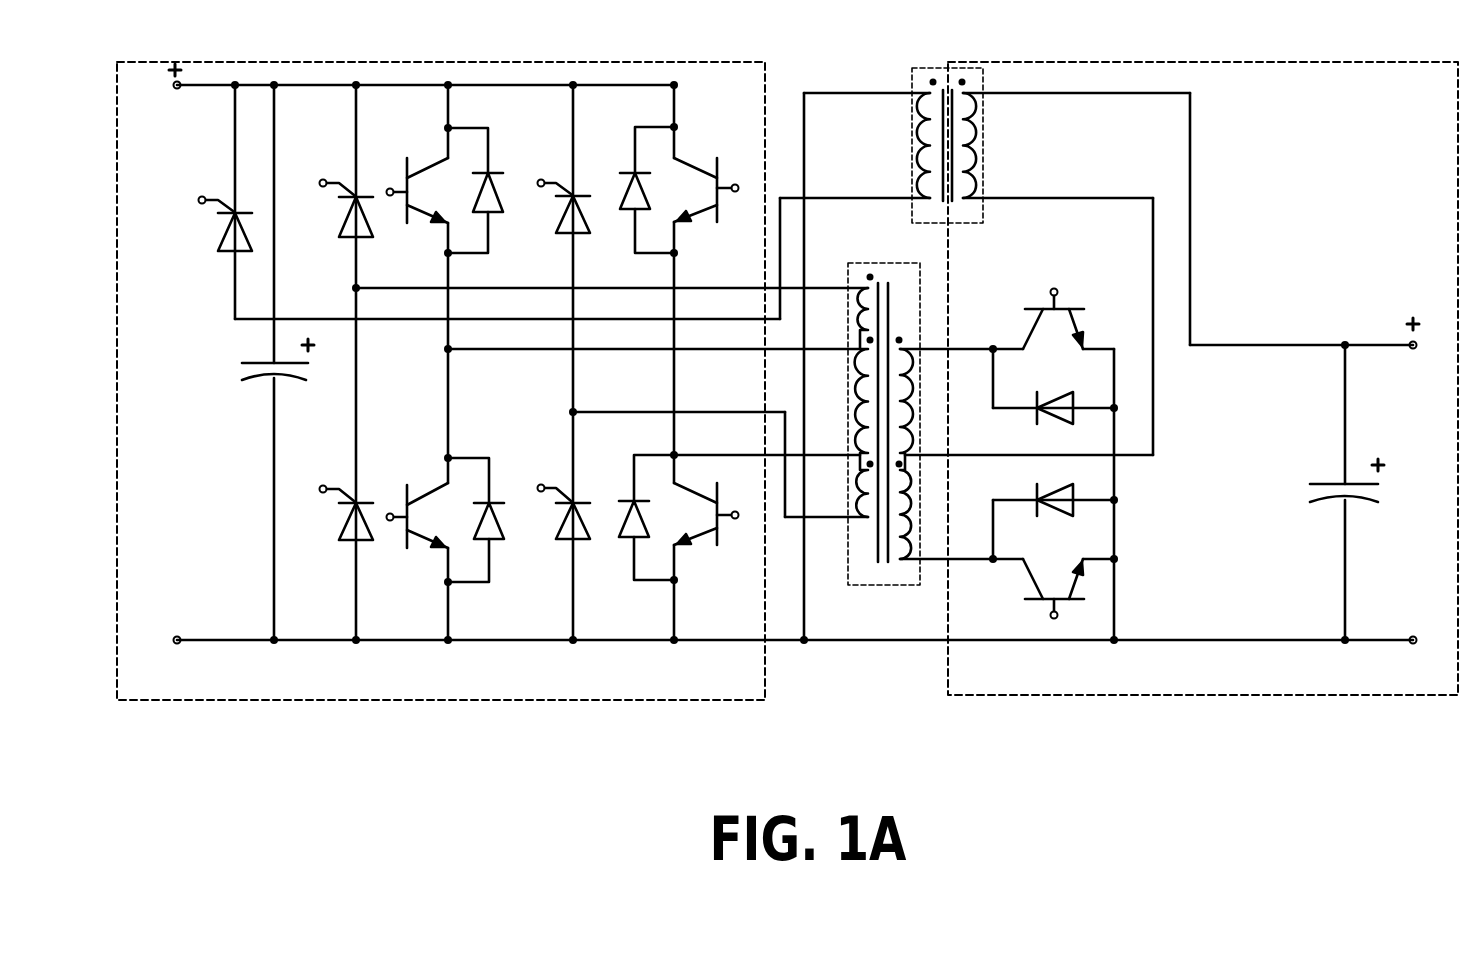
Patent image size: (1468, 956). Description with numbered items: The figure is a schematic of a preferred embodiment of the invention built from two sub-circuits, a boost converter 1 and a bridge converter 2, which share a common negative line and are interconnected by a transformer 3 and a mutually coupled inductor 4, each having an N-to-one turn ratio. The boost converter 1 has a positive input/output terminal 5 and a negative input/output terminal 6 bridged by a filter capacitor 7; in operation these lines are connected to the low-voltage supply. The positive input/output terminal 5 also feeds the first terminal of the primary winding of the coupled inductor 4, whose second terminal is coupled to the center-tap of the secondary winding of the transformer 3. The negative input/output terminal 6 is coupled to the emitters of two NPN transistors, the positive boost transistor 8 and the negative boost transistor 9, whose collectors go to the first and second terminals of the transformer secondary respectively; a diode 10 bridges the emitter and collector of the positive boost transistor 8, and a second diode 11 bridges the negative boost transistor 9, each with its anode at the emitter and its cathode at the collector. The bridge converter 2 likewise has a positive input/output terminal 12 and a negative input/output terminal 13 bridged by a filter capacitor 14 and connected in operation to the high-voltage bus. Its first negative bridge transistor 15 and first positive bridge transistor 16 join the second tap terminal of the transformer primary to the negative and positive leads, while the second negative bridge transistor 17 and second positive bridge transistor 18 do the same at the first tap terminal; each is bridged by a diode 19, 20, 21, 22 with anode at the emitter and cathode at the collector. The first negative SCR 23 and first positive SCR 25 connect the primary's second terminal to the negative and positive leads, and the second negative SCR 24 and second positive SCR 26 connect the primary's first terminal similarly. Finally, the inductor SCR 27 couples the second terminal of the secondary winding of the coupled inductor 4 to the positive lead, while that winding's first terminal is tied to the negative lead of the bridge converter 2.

The boost converter 1 is at (1203, 399).
The bridge converter 2 is at (441, 400).
The transformer 3 is at (884, 405).
The mutually coupled inductor 4 is at (933, 145).
The positive input/output terminal 5 is at (1426, 340).
The negative input/output terminal 6 is at (1428, 640).
The filter capacitor 7 is at (1334, 492).
The positive boost transistor 8 is at (1053, 321).
The negative boost transistor 9 is at (1053, 586).
The diode 10 is at (1053, 419).
The second diode 11 is at (1053, 491).
The positive input/output terminal 12 is at (156, 83).
The negative input/output terminal 13 is at (156, 643).
The filter capacitor 14 is at (259, 364).
The first negative bridge transistor 15 is at (702, 514).
The first positive bridge transistor 16 is at (701, 190).
The second negative bridge transistor 17 is at (420, 515).
The second positive bridge transistor 18 is at (420, 190).
The diode 19 is at (632, 517).
The diode 20 is at (632, 190).
The diode 21 is at (488, 520).
The diode 22 is at (488, 190).
The first negative SCR 23 is at (561, 496).
The second negative SCR 24 is at (343, 497).
The first positive SCR 25 is at (561, 190).
The second positive SCR 26 is at (343, 193).
The inductor SCR 27 is at (220, 207).